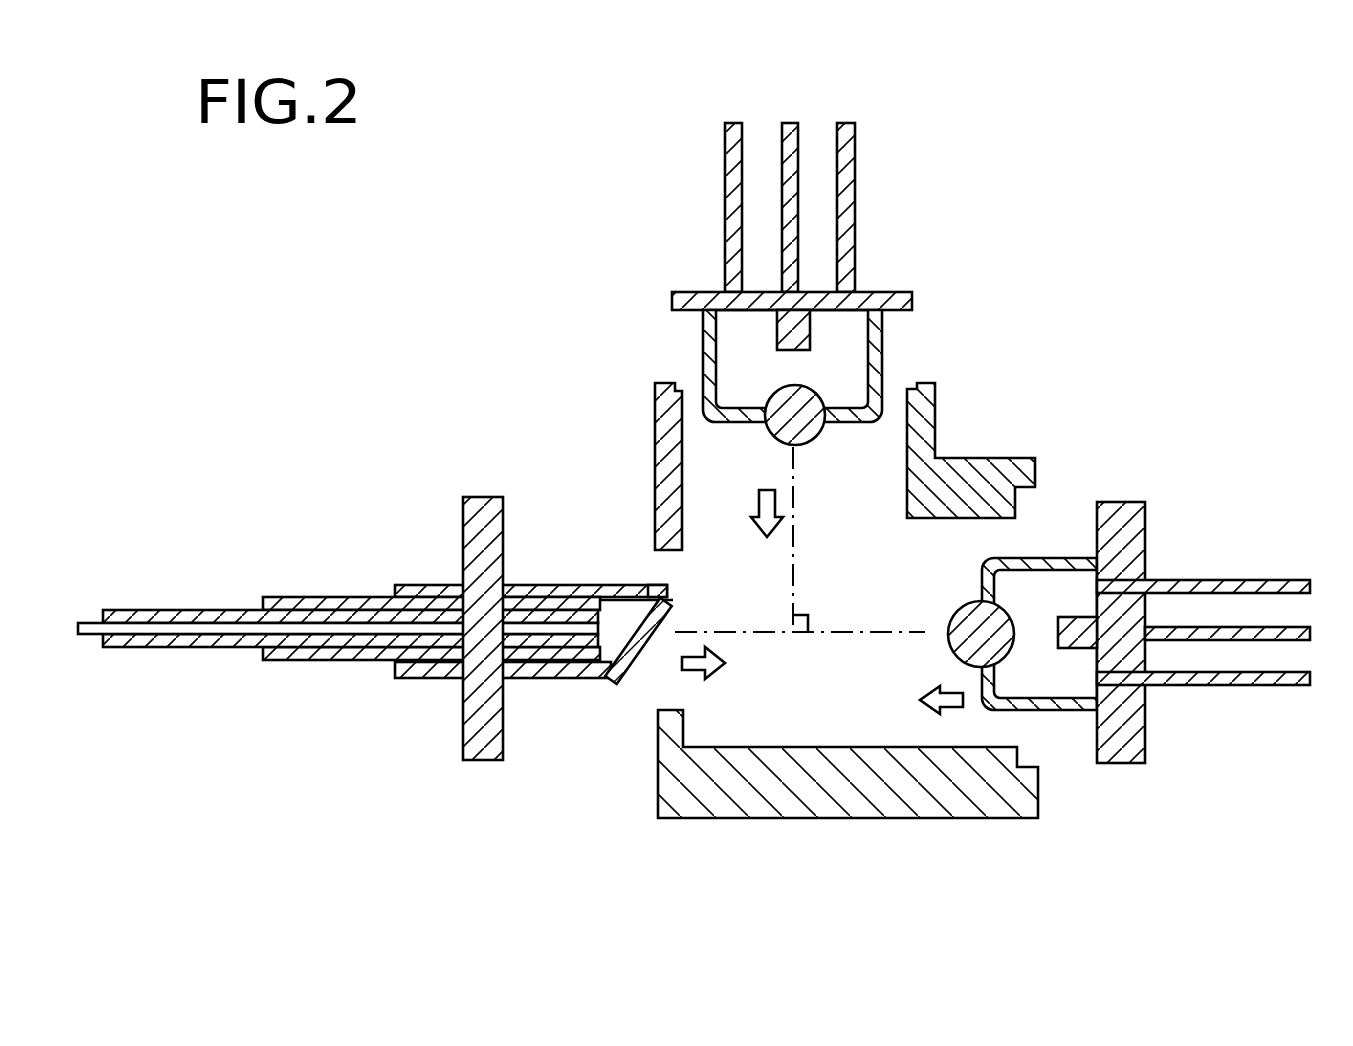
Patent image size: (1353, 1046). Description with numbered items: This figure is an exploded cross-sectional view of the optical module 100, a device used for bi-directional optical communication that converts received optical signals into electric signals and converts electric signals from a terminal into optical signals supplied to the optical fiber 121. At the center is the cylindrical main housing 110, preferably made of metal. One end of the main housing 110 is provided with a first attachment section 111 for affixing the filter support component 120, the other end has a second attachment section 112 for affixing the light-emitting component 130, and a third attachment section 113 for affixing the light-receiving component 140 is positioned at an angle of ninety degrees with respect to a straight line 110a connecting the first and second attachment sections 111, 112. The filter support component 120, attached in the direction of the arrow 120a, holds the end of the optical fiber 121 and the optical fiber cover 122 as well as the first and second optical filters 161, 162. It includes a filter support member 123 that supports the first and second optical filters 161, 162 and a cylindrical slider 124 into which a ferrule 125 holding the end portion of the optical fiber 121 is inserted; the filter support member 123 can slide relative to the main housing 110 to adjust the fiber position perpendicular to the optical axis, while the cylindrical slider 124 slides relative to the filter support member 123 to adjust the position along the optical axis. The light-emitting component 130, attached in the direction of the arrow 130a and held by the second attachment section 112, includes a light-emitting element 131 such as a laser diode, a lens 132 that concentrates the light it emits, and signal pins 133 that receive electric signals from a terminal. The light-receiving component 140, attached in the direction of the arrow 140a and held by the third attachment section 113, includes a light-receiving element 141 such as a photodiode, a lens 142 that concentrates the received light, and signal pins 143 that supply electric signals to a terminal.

The optical module 100 is at (1090, 185).
The main housing 110 is at (965, 818).
The straight line 110a is at (873, 632).
The first attachment section 111 is at (652, 563).
The second attachment section 112 is at (1039, 739).
The third attachment section 113 is at (688, 380).
The filter support component 120 is at (372, 620).
The arrow 120a is at (716, 678).
The optical fiber 121 is at (92, 633).
The optical fiber cover 122 is at (227, 647).
The filter support member 123 is at (463, 758).
The cylindrical slider 124 is at (360, 662).
The ferrule 125 is at (598, 680).
The light-emitting component 130 is at (1105, 639).
The arrow 130a is at (926, 711).
The light-emitting element 131 is at (1058, 620).
The lens 132 is at (958, 607).
The signal pins 133 is at (1260, 673).
The light-receiving component 140 is at (826, 272).
The arrow 140a is at (758, 490).
The light-receiving element 141 is at (810, 343).
The lens 142 is at (812, 440).
The signal pins 143 is at (847, 123).
The first optical filter 161 is at (637, 673).
The second optical filter 162 is at (652, 583).